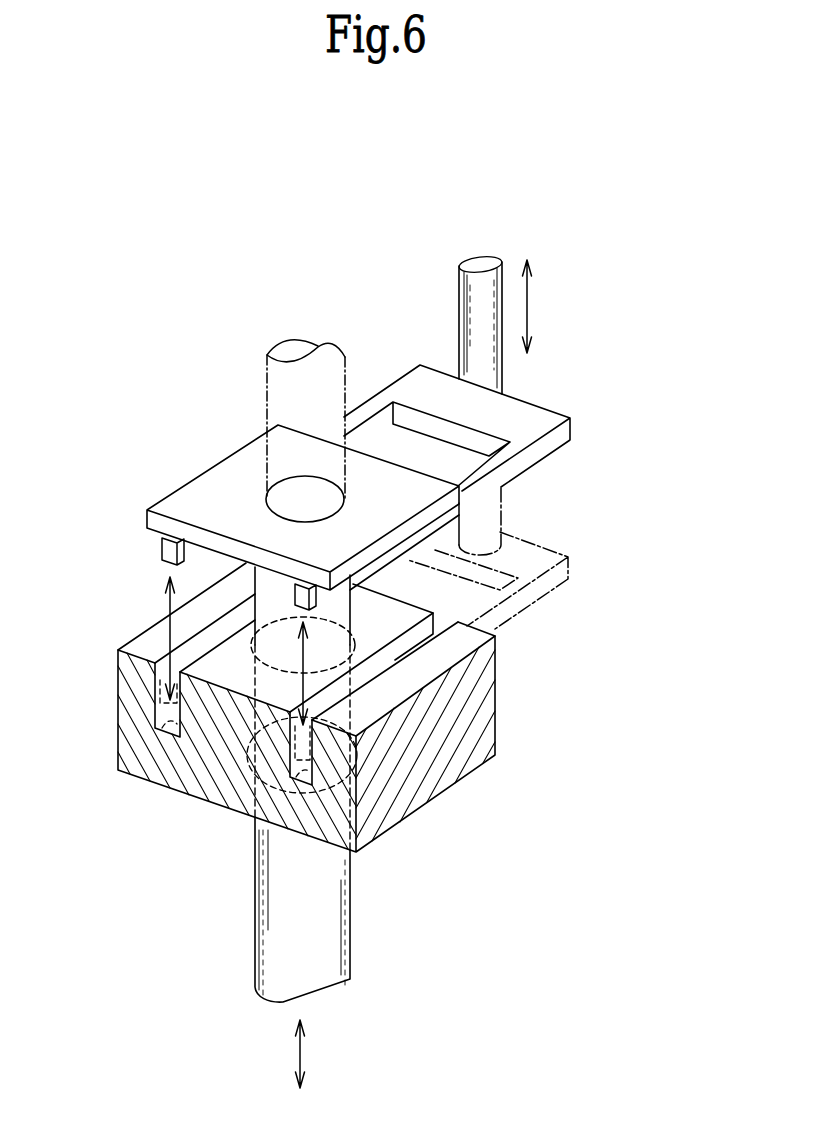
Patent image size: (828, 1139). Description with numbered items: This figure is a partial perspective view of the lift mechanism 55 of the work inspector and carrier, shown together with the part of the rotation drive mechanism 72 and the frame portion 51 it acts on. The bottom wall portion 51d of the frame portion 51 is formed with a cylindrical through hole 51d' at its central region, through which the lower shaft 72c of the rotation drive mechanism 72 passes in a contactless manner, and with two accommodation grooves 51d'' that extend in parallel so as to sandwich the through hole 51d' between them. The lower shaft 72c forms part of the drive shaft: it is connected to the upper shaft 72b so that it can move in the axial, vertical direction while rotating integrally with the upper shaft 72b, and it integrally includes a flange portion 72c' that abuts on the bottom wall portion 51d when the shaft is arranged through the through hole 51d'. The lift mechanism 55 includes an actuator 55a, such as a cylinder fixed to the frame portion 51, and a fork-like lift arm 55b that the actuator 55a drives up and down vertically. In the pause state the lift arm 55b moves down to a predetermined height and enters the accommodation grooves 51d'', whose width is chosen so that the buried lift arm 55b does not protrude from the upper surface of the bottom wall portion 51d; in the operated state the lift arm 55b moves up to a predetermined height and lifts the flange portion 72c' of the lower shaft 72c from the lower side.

The lift mechanism 55 is at (457, 200).
The actuator 55a is at (470, 290).
The lift arm 55b is at (410, 380).
The rotation drive mechanism 72 is at (336, 694).
The upper shaft 72b is at (266, 402).
The flange portion 72c' is at (284, 554).
The lower shaft 72c is at (408, 827).
The frame portion 51 is at (272, 720).
The bottom wall portion 51d is at (275, 614).
The through hole 51d' is at (244, 756).
The accommodation grooves 51d'' is at (203, 811).